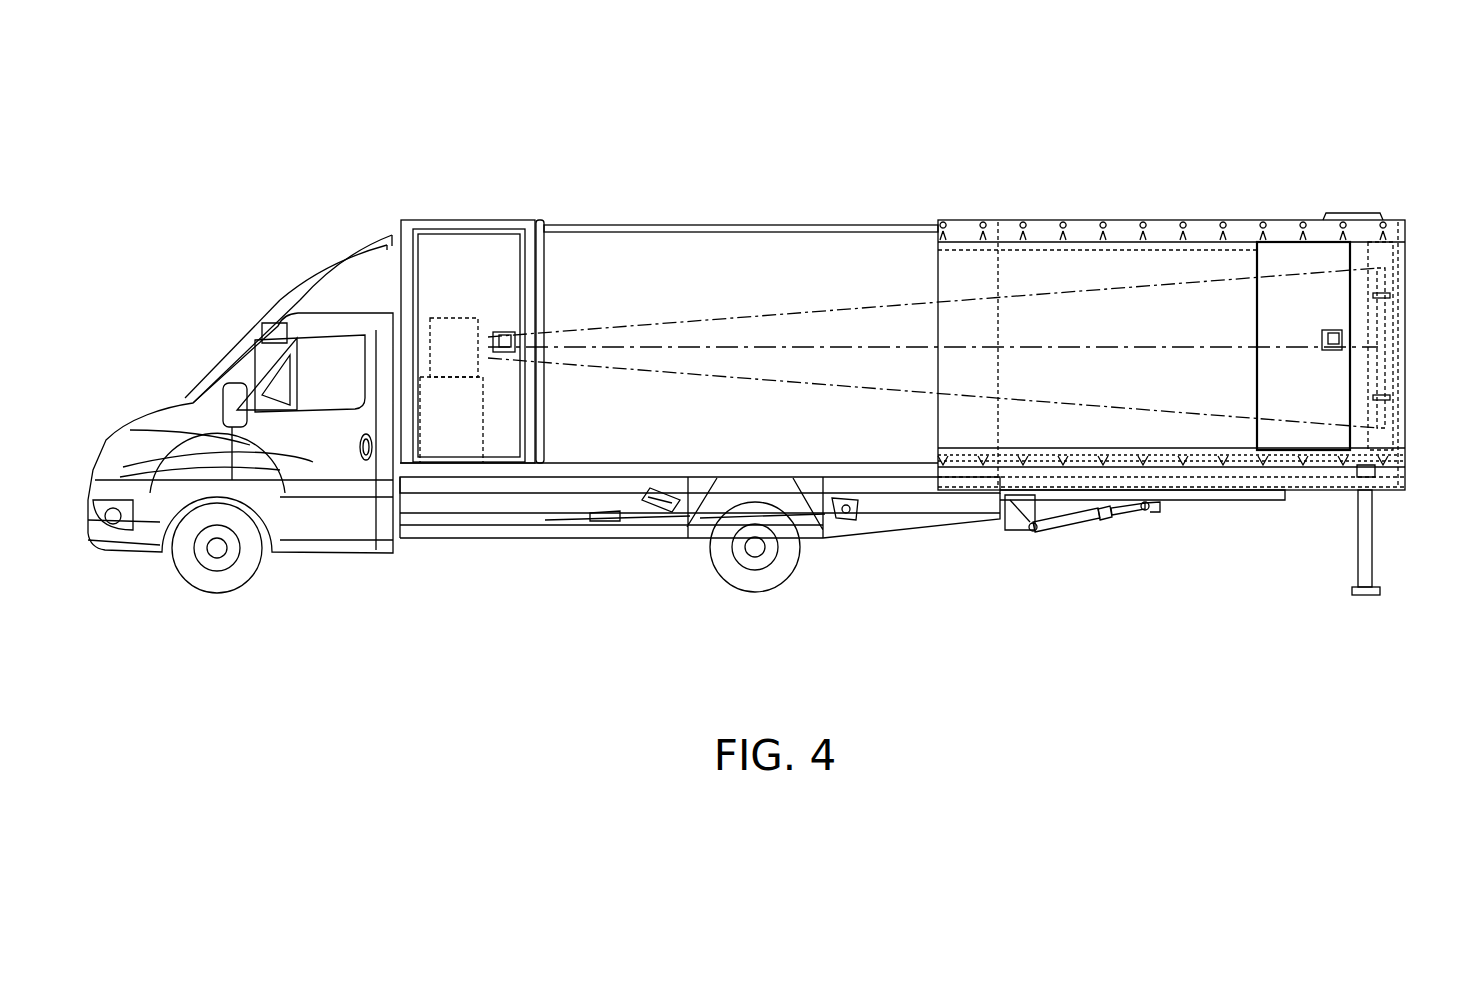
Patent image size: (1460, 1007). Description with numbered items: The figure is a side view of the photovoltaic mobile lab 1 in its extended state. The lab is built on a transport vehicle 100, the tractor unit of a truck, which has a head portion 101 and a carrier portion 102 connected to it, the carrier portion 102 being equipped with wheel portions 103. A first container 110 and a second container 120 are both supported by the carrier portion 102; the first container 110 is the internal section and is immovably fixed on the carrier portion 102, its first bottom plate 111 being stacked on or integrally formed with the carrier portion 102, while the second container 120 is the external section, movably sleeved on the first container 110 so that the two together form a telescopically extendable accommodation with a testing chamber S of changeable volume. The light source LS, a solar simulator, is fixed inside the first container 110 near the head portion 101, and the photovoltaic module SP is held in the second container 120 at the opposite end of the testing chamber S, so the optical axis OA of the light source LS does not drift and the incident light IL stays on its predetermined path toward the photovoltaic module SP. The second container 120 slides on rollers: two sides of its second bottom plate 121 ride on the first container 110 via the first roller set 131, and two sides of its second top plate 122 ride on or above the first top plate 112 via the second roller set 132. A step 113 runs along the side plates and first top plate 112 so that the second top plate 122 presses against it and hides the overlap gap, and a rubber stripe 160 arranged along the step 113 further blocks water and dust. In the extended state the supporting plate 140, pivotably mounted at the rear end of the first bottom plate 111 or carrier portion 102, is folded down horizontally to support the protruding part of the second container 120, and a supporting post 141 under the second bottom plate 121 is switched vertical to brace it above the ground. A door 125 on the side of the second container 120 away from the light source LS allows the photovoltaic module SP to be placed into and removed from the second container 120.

The photovoltaic mobile lab 1 is at (232, 192).
The transport vehicle 100 is at (128, 566).
The head portion 101 is at (166, 424).
The carrier portion 102 is at (611, 497).
The wheel portions 103 is at (216, 585).
The first container 110 is at (493, 211).
The first bottom plate 111 is at (498, 470).
The first top plate 112 is at (749, 226).
The step 113 is at (541, 220).
The second container 120 is at (1270, 216).
The second bottom plate 121 is at (1243, 472).
The second top plate 122 is at (1200, 222).
The door 125 is at (1381, 240).
The first roller set 131 is at (1185, 472).
The second roller set 132 is at (1105, 222).
The supporting plate 140 is at (1090, 495).
The supporting post 141 is at (1370, 540).
The rubber stripe 160 is at (542, 268).
The testing chamber S is at (458, 273).
The light source LS is at (452, 337).
The optical axis OA is at (731, 346).
The incident light IL is at (763, 381).
The photovoltaic module SP is at (1380, 325).